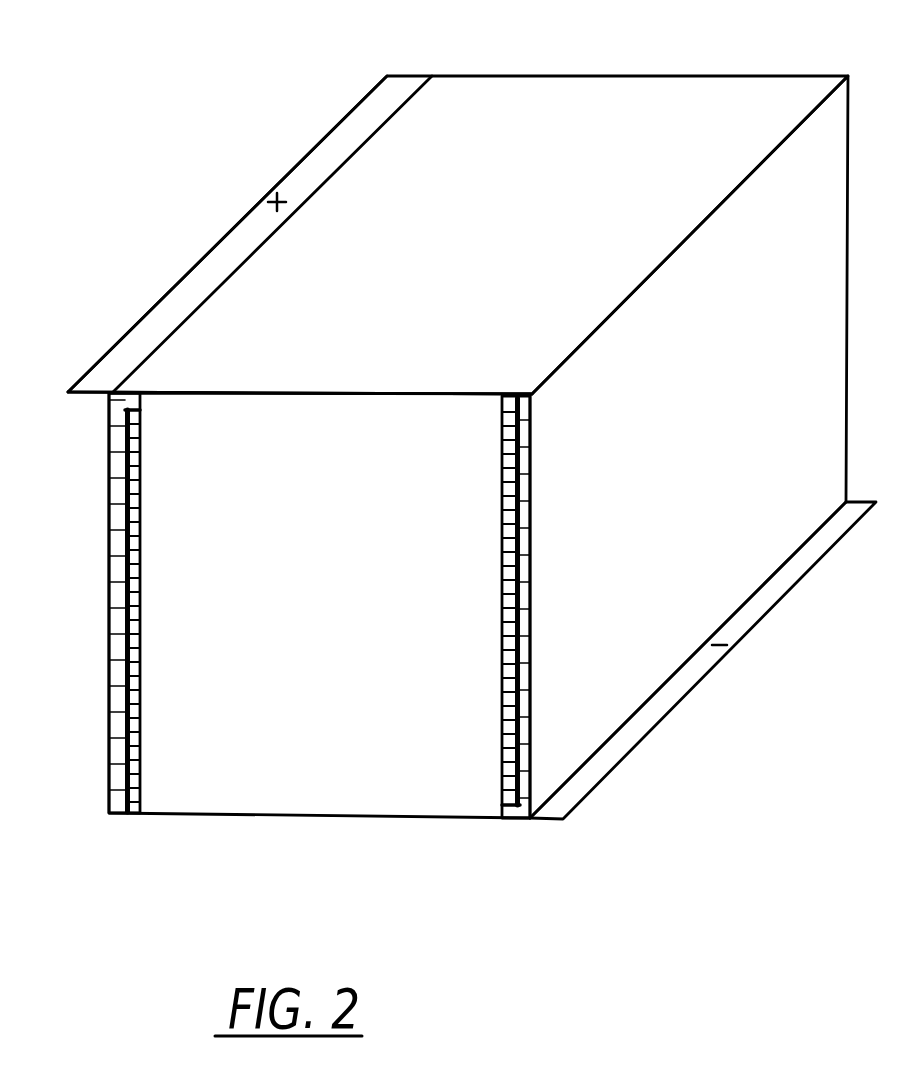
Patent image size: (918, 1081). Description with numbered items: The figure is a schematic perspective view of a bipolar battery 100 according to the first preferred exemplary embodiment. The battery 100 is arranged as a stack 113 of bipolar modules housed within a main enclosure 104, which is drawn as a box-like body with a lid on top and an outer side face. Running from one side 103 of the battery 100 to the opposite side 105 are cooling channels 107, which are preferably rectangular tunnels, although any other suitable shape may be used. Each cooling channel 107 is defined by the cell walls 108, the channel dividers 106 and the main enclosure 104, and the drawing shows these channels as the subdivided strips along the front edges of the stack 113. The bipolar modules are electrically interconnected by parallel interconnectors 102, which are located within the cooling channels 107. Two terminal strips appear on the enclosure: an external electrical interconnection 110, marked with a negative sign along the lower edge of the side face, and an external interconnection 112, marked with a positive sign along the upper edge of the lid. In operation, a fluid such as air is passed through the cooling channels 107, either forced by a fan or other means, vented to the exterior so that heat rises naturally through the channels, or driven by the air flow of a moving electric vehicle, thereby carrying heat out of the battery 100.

The bipolar battery 100 is at (97, 46).
The parallel interconnectors 102 is at (110, 692).
The side 103 is at (298, 392).
The main enclosure 104 is at (635, 397).
The side 105 is at (495, 76).
The channel dividers 106 is at (120, 580).
The cooling channels 107 is at (115, 667).
The cell walls 108 is at (140, 452).
The external electrical interconnection 110 is at (655, 710).
The external interconnection 112 is at (342, 118).
The stack of modules 113 is at (293, 782).